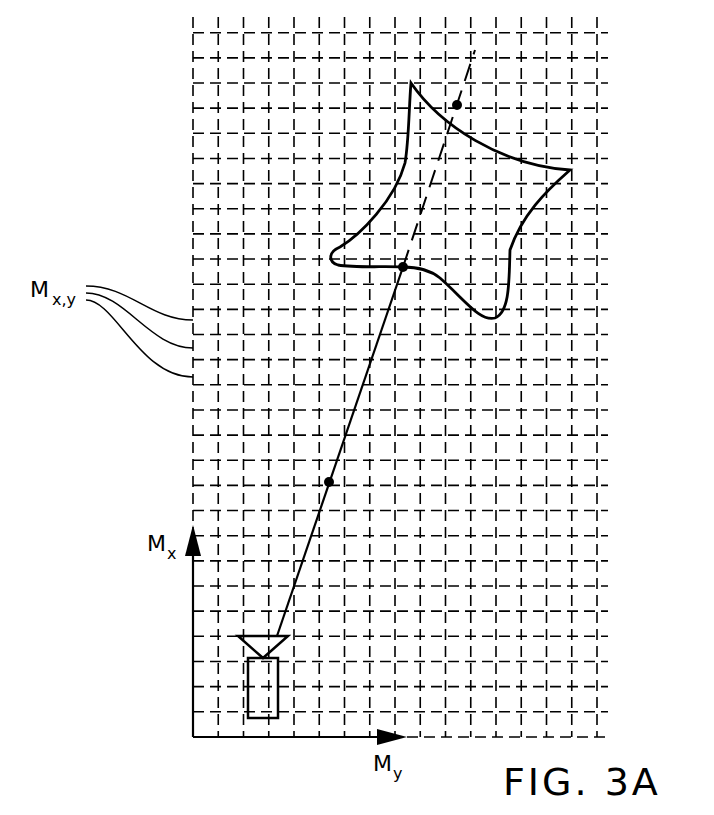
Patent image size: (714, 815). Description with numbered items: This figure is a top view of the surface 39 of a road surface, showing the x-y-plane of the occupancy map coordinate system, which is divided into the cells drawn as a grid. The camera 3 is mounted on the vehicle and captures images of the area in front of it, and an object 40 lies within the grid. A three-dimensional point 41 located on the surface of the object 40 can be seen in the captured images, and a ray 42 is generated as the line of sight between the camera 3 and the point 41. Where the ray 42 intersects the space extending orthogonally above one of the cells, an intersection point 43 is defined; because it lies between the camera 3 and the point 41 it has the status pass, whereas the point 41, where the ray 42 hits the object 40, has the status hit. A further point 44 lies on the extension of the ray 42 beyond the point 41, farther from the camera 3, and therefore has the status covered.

The camera 3 is at (278, 688).
The surface 39 is at (193, 470).
The object 40 is at (510, 247).
The 3D point 41 is at (403, 267).
The ray 42 is at (377, 340).
The intersection point 43 is at (329, 482).
The 3D point 44 is at (457, 105).